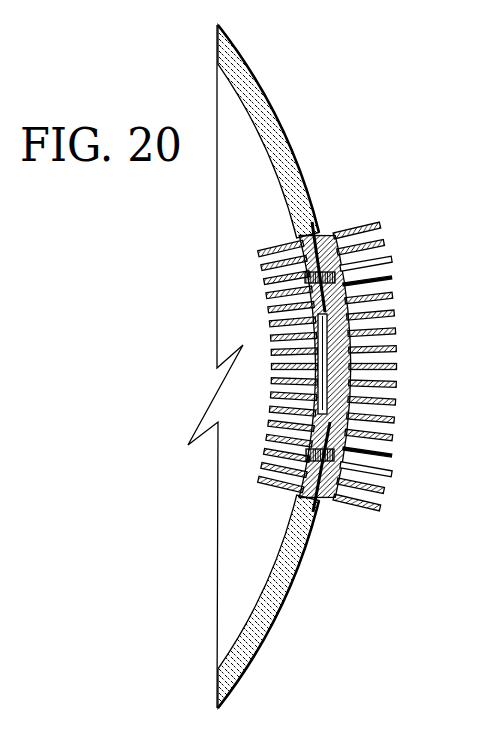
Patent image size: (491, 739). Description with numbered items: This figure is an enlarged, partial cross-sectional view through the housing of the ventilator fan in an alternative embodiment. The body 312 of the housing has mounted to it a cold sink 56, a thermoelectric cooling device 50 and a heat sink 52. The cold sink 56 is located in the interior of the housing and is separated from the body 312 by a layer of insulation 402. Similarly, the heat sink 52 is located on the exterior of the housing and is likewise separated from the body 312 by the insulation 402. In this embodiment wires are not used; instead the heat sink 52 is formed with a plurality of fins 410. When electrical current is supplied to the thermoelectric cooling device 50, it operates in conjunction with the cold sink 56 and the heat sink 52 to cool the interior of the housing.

The body 312 is at (284, 137).
The heat sink 52 is at (298, 387).
The cold sink 56 is at (255, 257).
The thermoelectric cooling device 50 is at (235, 362).
The fins 410 is at (372, 510).
The insulation 402 is at (320, 497).